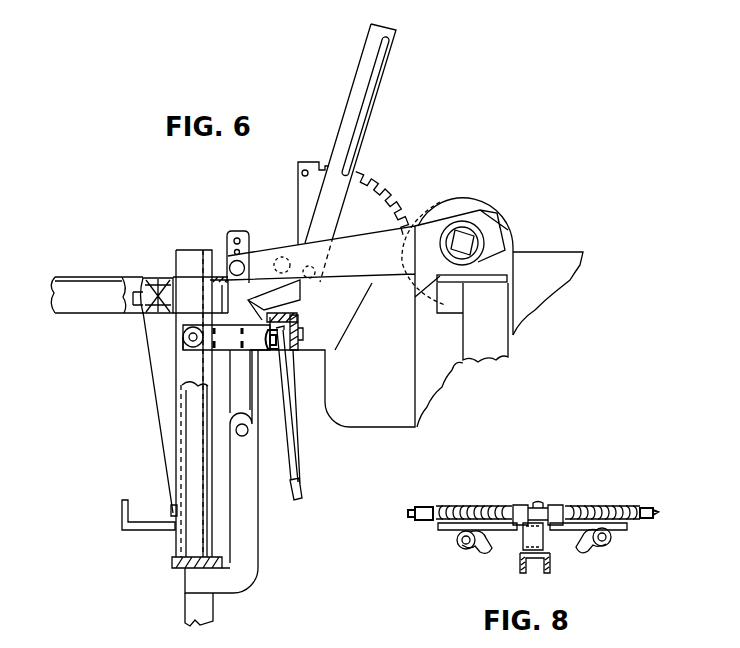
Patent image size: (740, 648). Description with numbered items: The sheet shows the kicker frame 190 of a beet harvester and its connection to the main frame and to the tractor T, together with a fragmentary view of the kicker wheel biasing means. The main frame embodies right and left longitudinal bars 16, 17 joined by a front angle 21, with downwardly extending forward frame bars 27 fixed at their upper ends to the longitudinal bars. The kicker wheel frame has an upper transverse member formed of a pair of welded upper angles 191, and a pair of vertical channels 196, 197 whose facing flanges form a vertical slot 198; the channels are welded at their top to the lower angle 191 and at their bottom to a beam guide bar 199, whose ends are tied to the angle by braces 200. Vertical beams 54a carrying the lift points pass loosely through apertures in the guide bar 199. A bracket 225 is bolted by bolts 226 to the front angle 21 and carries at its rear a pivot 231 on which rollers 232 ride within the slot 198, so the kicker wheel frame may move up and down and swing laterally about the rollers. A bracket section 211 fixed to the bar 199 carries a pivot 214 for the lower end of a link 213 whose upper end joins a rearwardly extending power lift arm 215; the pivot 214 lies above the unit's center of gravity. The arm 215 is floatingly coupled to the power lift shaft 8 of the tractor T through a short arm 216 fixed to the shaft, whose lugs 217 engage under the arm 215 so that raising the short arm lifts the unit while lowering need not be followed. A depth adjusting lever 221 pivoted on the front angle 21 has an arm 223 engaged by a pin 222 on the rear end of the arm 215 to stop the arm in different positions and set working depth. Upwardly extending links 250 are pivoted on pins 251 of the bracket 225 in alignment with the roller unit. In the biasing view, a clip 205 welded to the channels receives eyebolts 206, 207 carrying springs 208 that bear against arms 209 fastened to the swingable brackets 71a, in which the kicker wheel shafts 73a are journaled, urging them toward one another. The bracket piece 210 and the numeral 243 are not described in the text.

In FIG. 6, the depth adjusting lever 221 is at (384, 62).
In FIG. 6, the power lift arm 215 is at (417, 230).
In FIG. 6, the pin 222 is at (282, 257).
In FIG. 6, the short arm 216 is at (444, 207).
In FIG. 6, the power lift shaft 8 is at (454, 234).
In FIG. 6, the tractor T is at (561, 249).
In FIG. 6, the forward frame bar 27 is at (494, 342).
In FIG. 6, the lugs 217 is at (432, 306).
In FIG. 6, the arm 223 is at (288, 298).
In FIG. 6, the longitudinal bar 16 is at (72, 290).
In FIG. 6, the longitudinal bar 17 is at (130, 288).
In FIG. 6, the upper angles 191 is at (155, 278).
In FIG. 6, the channel 196 is at (190, 362).
In FIG. 8, the channel 196 is at (518, 573).
In FIG. 6, the channel 197 is at (190, 415).
In FIG. 8, the channel 197 is at (551, 570).
In FIG. 6, the vertical slot 198 is at (177, 377).
In FIG. 6, the braces 200 is at (171, 444).
In FIG. 6, the kicker frame 190 is at (146, 478).
In FIG. 6, the clip 205 is at (124, 528).
In FIG. 8, the clip 205 is at (530, 537).
In FIG. 6, the beam guide bar 199 is at (178, 561).
In FIG. 6, the beams 54a is at (195, 603).
In FIG. 6, the J bracket 210 is at (267, 588).
In FIG. 6, the bracket section 211 is at (247, 488).
In FIG. 6, the pivot 214 is at (247, 434).
In FIG. 6, the link 213 is at (268, 361).
In FIG. 6, the front angle 21 is at (297, 324).
In FIG. 6, the pivot 231 is at (183, 336).
In FIG. 6, the rollers 232 is at (181, 342).
In FIG. 6, the bolts 226 is at (304, 338).
In FIG. 6, the bracket 225 is at (265, 352).
In FIG. 6, the pin 251 is at (272, 346).
In FIG. 6, the links 250 is at (300, 485).
In FIG. 6, the numeral 243 is at (267, 639).
In FIG. 8, the eyebolt 206 is at (412, 513).
In FIG. 8, the springs 208 is at (453, 506).
In FIG. 8, the eyebolt 207 is at (652, 508).
In FIG. 8, the arms 209 is at (563, 505).
In FIG. 8, the kicker wheel shafts 73a is at (457, 539).
In FIG. 8, the brackets 71a is at (458, 544).